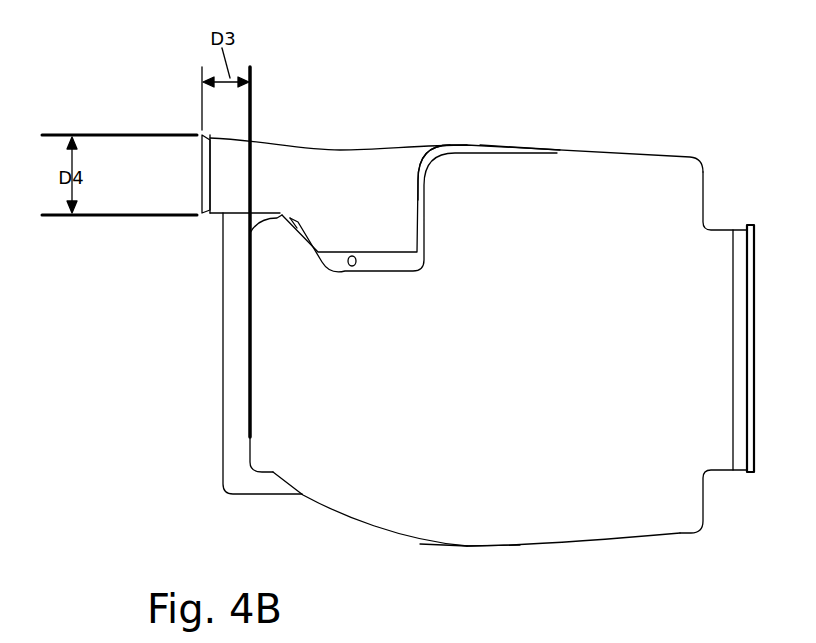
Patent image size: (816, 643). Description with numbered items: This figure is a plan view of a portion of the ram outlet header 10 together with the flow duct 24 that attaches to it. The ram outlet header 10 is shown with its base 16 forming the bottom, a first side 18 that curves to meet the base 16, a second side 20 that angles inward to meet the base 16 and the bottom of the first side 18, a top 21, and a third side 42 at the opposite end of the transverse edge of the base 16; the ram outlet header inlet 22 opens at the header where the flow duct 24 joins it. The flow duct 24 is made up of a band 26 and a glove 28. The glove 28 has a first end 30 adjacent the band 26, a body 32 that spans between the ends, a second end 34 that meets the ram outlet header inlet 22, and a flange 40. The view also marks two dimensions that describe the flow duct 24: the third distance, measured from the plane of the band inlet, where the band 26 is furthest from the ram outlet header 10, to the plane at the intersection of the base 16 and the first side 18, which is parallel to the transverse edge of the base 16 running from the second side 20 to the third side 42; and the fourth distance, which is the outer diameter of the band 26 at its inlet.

The ram outlet header 10 is at (492, 547).
The base 16 is at (240, 457).
The first side 18 is at (413, 500).
The second side 20 is at (605, 540).
The top 21 is at (683, 218).
The ram outlet header inlet 22 is at (452, 178).
The flow duct 24 is at (355, 113).
The band 26 is at (206, 218).
The glove 28 is at (337, 166).
The first end 30 is at (230, 162).
The body 32 is at (375, 170).
The second end 34 is at (424, 158).
The flange 40 is at (370, 263).
The third side 42 is at (543, 148).